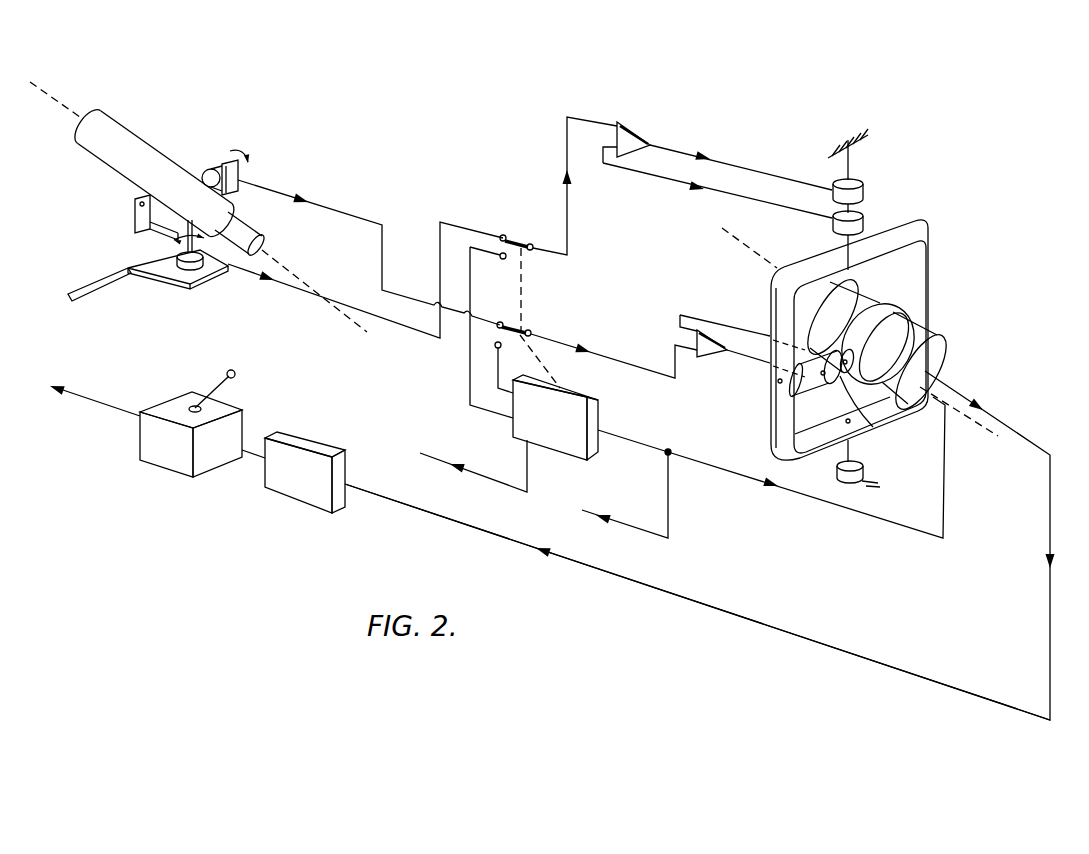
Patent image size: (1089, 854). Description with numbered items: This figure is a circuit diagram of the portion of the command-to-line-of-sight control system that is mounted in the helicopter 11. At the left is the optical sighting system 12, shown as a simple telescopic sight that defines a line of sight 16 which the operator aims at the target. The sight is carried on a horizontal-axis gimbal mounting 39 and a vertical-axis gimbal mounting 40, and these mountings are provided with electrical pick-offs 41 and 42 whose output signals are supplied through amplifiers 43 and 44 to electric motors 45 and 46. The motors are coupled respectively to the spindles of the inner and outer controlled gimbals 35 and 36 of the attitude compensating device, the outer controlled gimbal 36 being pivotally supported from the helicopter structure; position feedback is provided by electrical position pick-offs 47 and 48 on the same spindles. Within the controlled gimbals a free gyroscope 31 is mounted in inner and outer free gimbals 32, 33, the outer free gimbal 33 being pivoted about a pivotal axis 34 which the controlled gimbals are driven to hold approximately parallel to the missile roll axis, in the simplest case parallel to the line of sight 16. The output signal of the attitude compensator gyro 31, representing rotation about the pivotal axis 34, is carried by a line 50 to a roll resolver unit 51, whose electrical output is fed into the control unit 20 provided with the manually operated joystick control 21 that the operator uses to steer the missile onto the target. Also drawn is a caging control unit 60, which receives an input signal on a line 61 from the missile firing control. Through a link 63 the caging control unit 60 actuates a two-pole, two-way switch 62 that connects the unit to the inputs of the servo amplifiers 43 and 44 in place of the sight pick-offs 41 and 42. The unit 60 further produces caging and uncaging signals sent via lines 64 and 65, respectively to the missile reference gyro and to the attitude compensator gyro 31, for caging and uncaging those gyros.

The helicopter 11 is at (868, 141).
The optical sighting system 12 is at (143, 136).
The line of sight 16 is at (65, 107).
The control unit 20 is at (147, 447).
The joystick control 21 is at (222, 386).
The free gyroscope 31 is at (937, 360).
The inner free gimbal 32 is at (948, 364).
The outer free gimbal 33 is at (556, 522).
The pivotal axis 34 is at (768, 240).
The inner controlled gimbal 35 is at (915, 330).
The outer controlled gimbal 36 is at (930, 252).
The horizontal-axis gimbal mounting 39 is at (135, 216).
The vertical-axis gimbal mounting 40 is at (177, 255).
The electrical pick-off 41 is at (212, 170).
The electrical pick-off 42 is at (187, 268).
The amplifier 43 is at (710, 352).
The amplifier 44 is at (648, 137).
The electric motor 45 is at (802, 396).
The electric motor 46 is at (865, 188).
The electrical position pick-off 47 is at (869, 411).
The electrical position pick-off 48 is at (865, 222).
The line 50 is at (654, 590).
The roll resolver unit 51 is at (337, 448).
The caging control unit 60 is at (593, 417).
The line 61 is at (490, 482).
The two-pole, two-way switch 62 is at (525, 287).
The link 63 is at (548, 368).
The line 64 is at (670, 498).
The line 65 is at (855, 511).